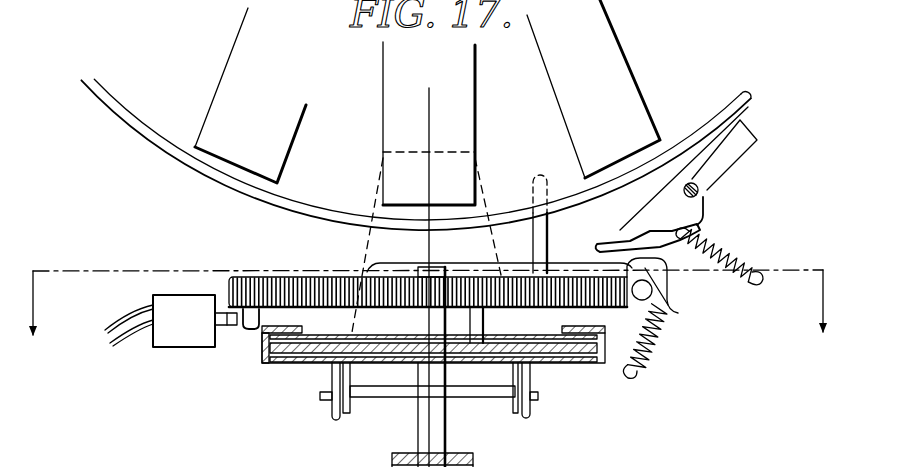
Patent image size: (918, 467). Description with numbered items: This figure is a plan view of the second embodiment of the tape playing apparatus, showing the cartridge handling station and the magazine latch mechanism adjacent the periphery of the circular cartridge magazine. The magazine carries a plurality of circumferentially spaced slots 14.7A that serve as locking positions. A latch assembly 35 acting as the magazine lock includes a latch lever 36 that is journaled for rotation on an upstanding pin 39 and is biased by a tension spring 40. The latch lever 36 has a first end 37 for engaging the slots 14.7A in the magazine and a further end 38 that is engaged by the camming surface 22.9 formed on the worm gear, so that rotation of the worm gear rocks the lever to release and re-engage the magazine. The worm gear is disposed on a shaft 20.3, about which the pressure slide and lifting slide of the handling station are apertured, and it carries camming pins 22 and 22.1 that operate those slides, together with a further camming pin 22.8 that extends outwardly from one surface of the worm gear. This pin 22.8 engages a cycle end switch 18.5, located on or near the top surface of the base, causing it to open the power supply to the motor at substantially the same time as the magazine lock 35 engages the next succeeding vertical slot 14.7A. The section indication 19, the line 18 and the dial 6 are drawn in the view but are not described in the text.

The rotating dial drum 6 is at (415, 166).
The center axis / pointer line 18 is at (429, 88).
The circumferentially spaced slots 14.7A is at (736, 99).
The latch lever 36 is at (628, 223).
The first end 37 is at (758, 138).
The upstanding pin 39 is at (710, 190).
The latch assembly 35 is at (708, 222).
The further end 38 is at (600, 243).
The camming pin 22 is at (530, 238).
The tension spring 40 is at (757, 269).
The cam 22.9 is at (667, 300).
The camming pin 22.1 is at (487, 333).
The camming pin 22.8 is at (254, 333).
The switch 18.5 is at (187, 348).
The shaft 20.3 is at (447, 453).
The section line 19- 19 is at (423, 321).